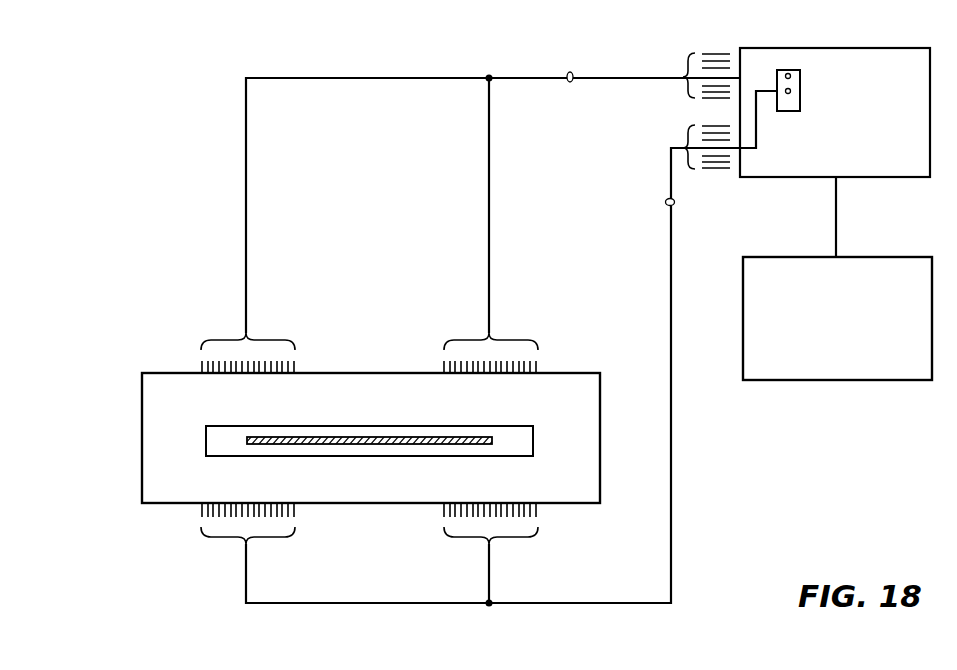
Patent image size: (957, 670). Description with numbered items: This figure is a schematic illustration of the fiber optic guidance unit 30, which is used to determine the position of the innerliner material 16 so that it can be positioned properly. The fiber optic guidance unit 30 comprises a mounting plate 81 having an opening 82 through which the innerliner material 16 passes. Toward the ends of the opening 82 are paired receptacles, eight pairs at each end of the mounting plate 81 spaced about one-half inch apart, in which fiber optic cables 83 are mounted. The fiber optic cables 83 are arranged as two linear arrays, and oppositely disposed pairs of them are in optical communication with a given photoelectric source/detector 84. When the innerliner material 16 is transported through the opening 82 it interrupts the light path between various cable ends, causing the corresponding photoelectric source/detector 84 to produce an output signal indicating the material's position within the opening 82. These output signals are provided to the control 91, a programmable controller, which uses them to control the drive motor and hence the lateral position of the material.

The fiber optic guidance unit 30 is at (166, 373).
The innerliner material 16 is at (338, 440).
The mounting plate 81 is at (163, 490).
The opening 82 is at (218, 441).
The fiber optic cables 83 is at (573, 74).
The photoelectric source/detector 84 is at (801, 96).
The control 91 is at (837, 278).